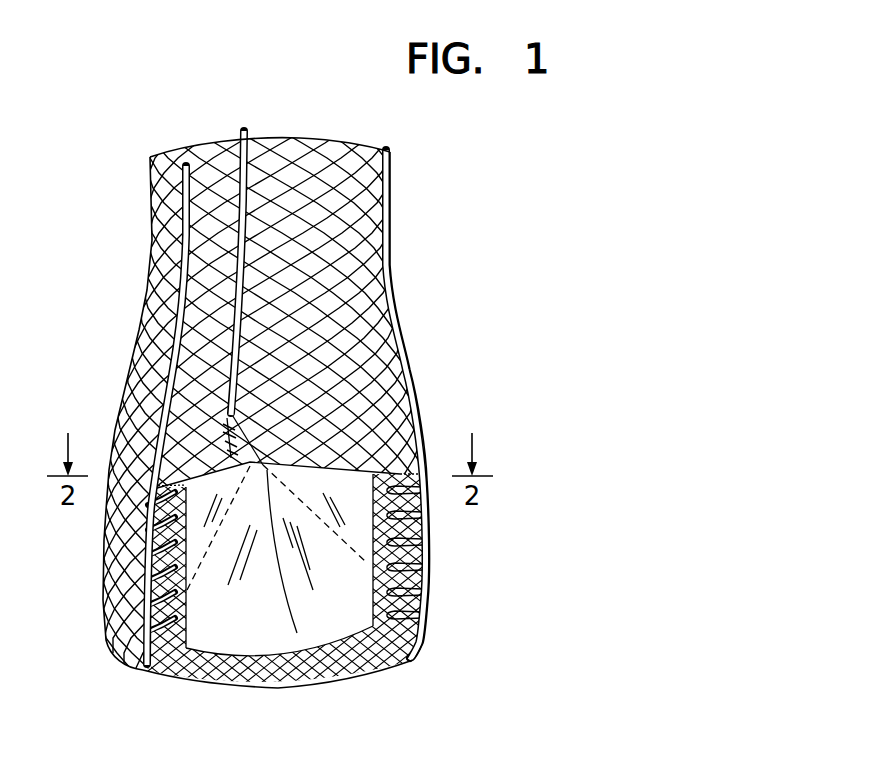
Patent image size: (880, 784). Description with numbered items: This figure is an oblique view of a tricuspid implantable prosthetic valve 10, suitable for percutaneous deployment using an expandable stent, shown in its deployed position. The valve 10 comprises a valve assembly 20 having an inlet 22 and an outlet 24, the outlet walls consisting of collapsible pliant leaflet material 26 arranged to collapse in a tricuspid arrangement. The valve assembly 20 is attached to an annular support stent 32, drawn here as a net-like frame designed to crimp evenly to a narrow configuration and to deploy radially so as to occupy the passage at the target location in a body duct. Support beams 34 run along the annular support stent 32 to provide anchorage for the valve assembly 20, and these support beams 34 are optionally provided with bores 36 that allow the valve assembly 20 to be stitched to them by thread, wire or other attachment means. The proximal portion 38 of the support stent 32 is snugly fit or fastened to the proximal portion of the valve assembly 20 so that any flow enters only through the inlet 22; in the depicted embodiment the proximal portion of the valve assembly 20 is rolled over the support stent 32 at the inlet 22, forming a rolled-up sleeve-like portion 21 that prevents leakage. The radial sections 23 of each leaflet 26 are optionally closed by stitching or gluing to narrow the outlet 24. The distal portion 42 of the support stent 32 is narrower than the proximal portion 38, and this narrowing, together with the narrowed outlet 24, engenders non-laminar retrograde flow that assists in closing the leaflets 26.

The tricuspid implantable prosthetic valve 10 is at (426, 323).
The valve assembly 20 is at (168, 540).
The rolled-up sleeve-like portion 21 is at (178, 674).
The inlet 22 is at (327, 670).
The radial sections 23 is at (176, 484).
The outlet 24 is at (353, 447).
The leaflet material 26 is at (350, 517).
The annular support stent 32 is at (130, 372).
The support beams 34 is at (228, 142).
The bores 36 is at (147, 632).
The proximal portion 38 is at (243, 676).
The distal portion 42 is at (323, 140).